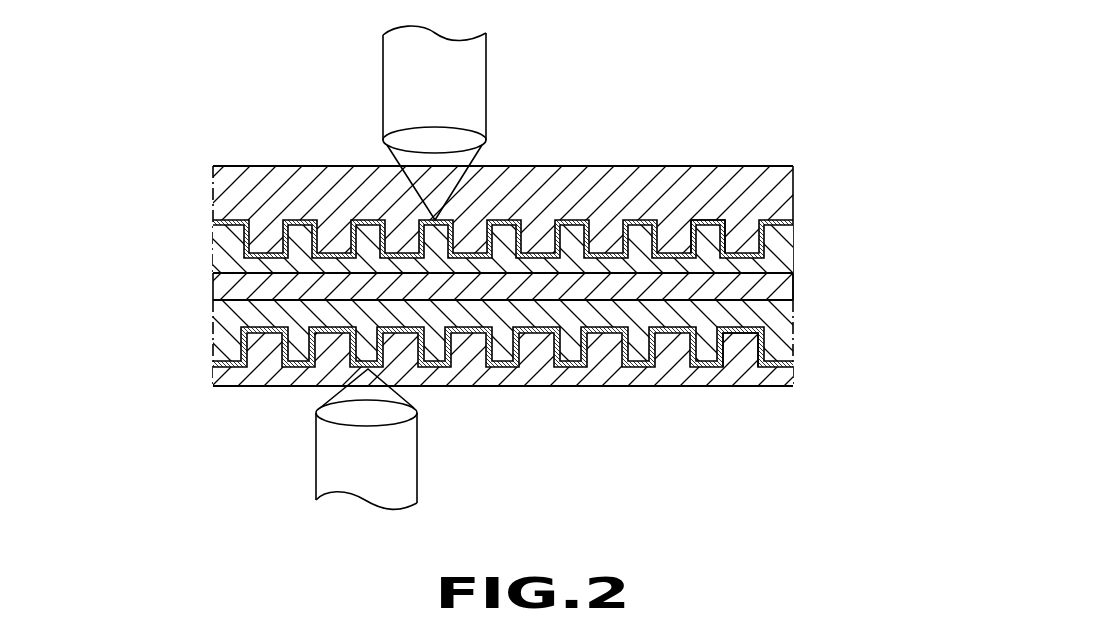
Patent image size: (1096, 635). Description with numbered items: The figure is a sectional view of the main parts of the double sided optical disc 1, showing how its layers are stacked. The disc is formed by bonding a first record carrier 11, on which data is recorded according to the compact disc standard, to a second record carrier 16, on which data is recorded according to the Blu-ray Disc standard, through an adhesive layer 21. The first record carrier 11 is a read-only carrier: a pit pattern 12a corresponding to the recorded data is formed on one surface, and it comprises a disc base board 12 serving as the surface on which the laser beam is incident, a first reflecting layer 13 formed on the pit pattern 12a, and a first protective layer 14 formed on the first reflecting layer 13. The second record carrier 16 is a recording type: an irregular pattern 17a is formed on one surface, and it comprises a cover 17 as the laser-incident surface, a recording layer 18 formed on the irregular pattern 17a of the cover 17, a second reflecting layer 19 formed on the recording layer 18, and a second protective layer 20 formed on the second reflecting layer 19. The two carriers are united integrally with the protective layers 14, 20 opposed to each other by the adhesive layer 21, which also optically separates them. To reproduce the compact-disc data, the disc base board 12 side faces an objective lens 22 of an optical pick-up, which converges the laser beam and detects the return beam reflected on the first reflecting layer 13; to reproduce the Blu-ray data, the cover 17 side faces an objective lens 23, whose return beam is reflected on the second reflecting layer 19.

The double sided optical disc 1 is at (594, 110).
The first record carrier 11 is at (198, 167).
The disc base board 12 is at (780, 186).
The pit pattern 12a is at (693, 222).
The first reflecting layer 13 is at (782, 218).
The first protective layer 14 is at (780, 251).
The second record carrier 16 is at (198, 298).
The cover 17 is at (780, 381).
The irregular pattern 17a is at (722, 377).
The recording layer 18 is at (780, 352).
The second reflecting layer 19 is at (780, 323).
The second protective layer 20 is at (782, 297).
The adhesive layer 21 is at (233, 286).
The objective lens 22 is at (461, 139).
The objective lens 23 is at (390, 412).